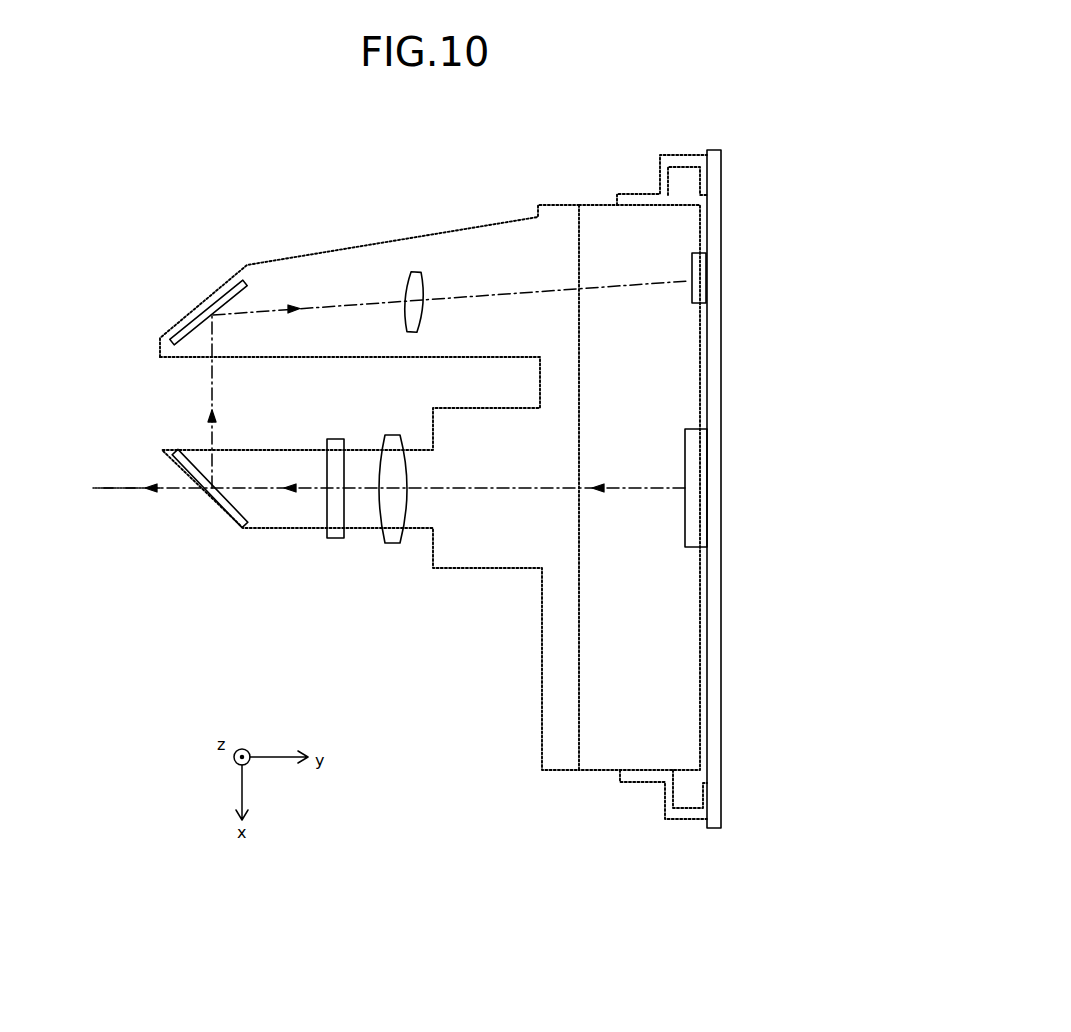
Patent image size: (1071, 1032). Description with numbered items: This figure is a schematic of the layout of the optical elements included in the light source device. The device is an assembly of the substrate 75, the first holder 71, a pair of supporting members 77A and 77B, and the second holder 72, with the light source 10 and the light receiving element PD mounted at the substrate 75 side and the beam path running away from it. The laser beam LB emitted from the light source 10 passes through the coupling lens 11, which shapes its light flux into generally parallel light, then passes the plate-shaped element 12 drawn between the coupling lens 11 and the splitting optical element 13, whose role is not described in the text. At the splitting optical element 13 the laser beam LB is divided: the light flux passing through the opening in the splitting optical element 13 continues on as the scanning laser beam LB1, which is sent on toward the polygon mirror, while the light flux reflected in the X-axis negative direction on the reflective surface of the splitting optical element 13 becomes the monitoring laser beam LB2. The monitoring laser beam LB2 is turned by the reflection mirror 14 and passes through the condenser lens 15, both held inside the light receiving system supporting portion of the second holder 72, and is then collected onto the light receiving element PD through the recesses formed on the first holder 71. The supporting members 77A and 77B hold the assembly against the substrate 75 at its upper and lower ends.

The light source 10 is at (685, 522).
The coupling lens 11 is at (392, 545).
The optical filter 12 is at (330, 540).
The splitting optical element 13 is at (220, 505).
The reflection mirror 14 is at (222, 290).
The condenser lens 15 is at (409, 272).
The first holder 71 is at (595, 205).
The second holder 72 is at (558, 205).
The substrate 75 is at (722, 180).
The supporting member 77A is at (683, 822).
The supporting member 77B is at (681, 153).
The light receiving element PD is at (706, 280).
The laser beam LB is at (470, 487).
The scanning laser beam LB1 is at (130, 487).
The monitoring laser beam LB2 is at (215, 385).